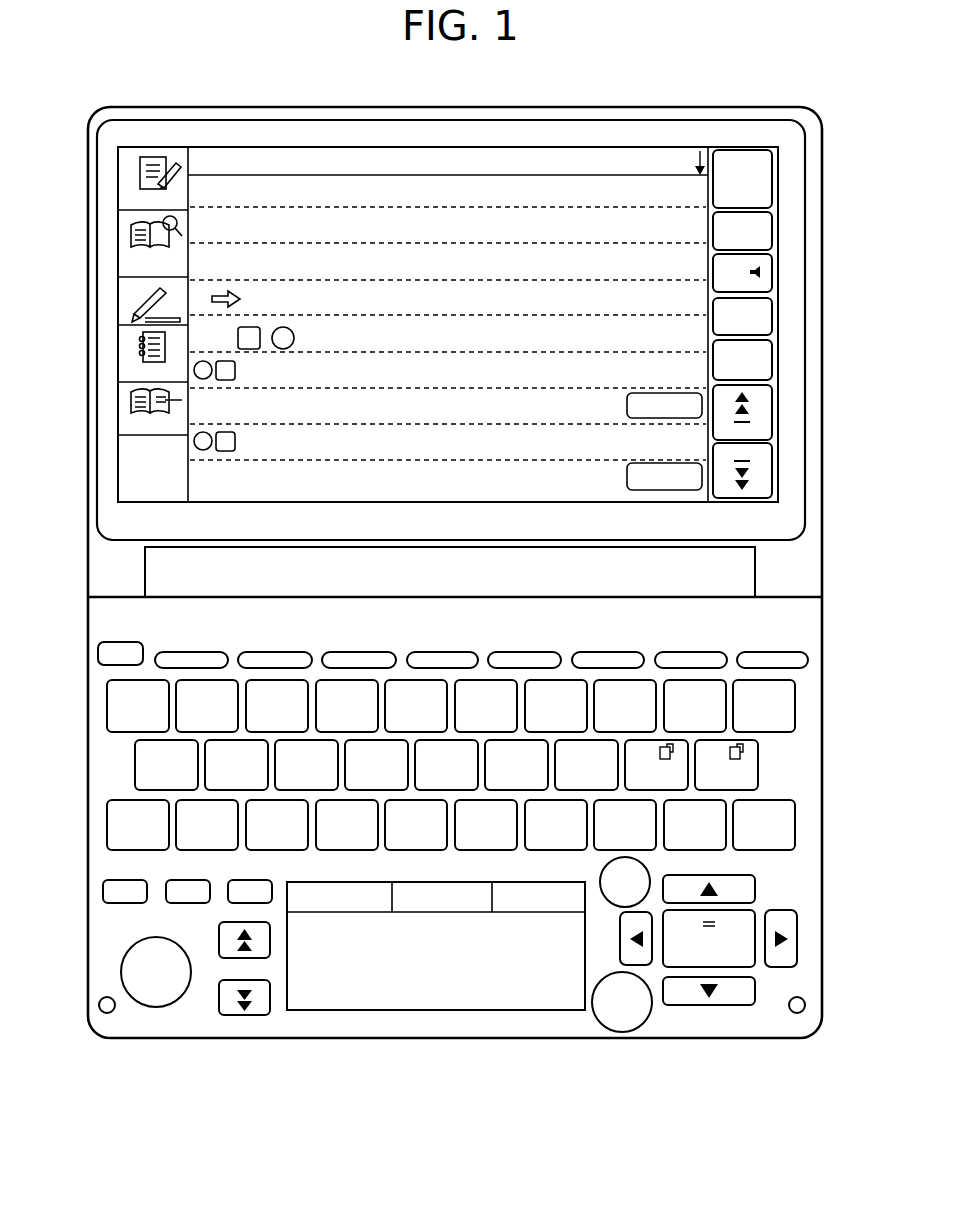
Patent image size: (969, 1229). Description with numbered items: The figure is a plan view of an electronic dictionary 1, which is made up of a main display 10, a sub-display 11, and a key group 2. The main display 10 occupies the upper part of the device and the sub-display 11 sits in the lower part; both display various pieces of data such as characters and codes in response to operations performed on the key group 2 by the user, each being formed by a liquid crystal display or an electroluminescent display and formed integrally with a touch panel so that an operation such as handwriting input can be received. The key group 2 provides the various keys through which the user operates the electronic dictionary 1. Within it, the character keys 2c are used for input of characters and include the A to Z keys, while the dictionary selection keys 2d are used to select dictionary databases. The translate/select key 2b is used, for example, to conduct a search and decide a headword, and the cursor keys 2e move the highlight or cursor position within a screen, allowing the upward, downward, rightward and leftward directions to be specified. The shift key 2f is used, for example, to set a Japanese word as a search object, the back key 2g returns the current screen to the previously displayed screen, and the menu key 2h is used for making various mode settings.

The electronic dictionary 1 is at (82, 97).
The main display 10 is at (777, 259).
The key group 2 is at (80, 610).
The dictionary selection keys 2d is at (641, 594).
The menu key 2h is at (722, 668).
The character keys 2c is at (80, 736).
The shift key 2f is at (107, 831).
The translate/select key 2b is at (756, 911).
The cursor keys 2e is at (756, 985).
The back key 2g is at (625, 1033).
The sub-display 11 is at (480, 1012).